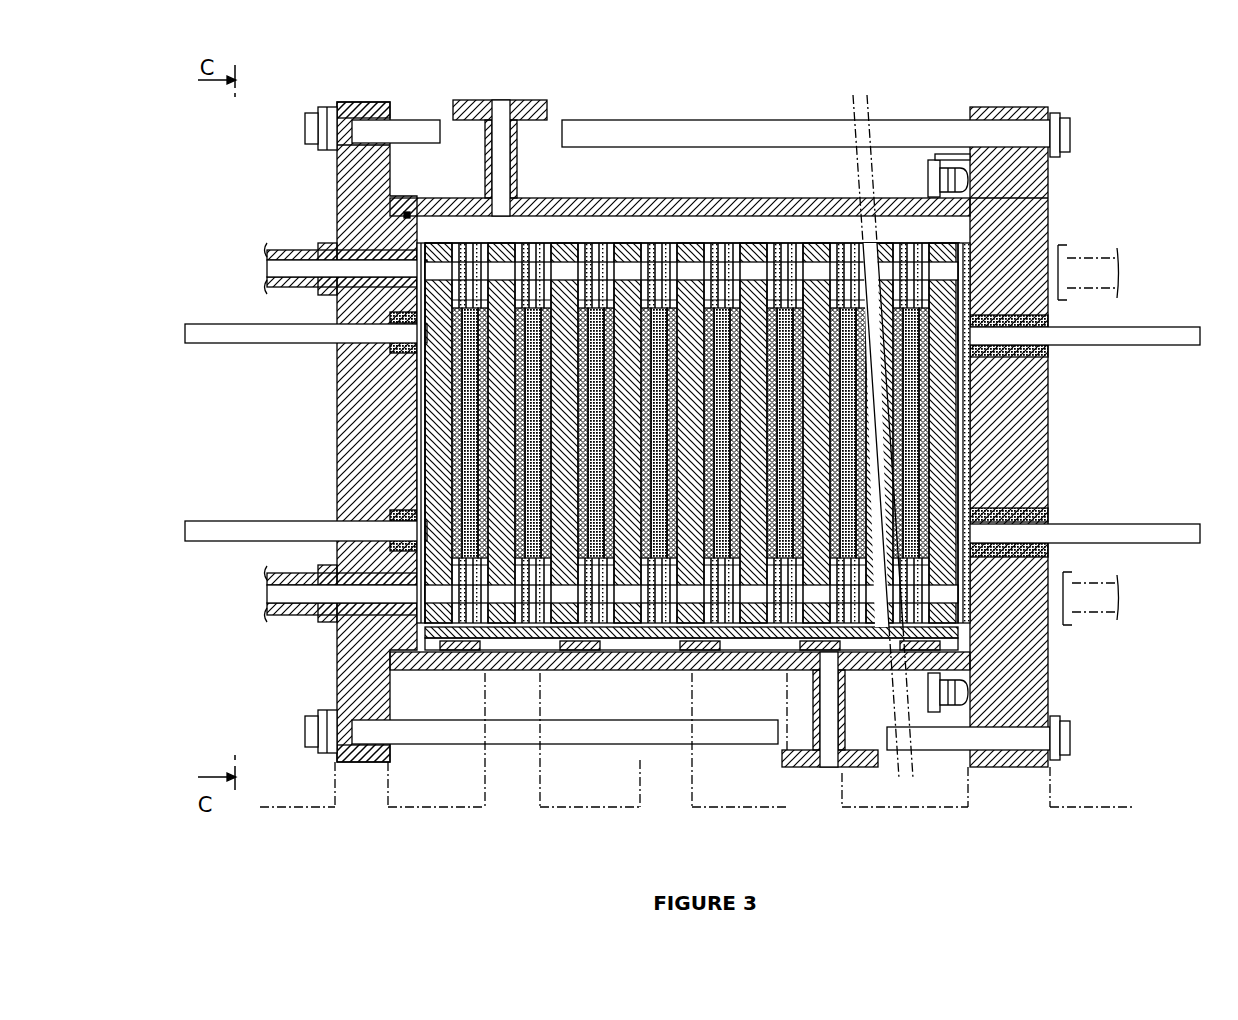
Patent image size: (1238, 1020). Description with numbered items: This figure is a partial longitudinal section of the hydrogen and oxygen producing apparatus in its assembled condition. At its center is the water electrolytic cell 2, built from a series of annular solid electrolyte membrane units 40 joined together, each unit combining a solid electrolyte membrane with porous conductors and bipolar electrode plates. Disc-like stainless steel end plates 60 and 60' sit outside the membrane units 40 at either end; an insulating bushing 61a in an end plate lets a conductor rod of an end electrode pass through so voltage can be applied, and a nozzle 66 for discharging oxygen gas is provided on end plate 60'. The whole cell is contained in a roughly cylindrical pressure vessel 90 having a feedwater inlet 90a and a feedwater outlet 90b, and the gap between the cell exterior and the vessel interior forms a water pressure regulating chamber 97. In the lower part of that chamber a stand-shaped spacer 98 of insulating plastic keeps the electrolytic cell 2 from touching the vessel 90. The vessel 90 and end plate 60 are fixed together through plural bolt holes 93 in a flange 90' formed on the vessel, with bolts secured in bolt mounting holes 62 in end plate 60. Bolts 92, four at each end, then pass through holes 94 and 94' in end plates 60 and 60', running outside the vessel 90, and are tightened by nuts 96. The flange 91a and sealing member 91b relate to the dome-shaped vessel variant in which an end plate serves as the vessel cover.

The water electrolytic cell 2 is at (693, 351).
The annular solid electrolyte membrane unit 40 is at (625, 243).
The end plate 60 is at (1062, 437).
The end plate 60' is at (319, 432).
The insulating bushing 61a is at (365, 102).
The bolt mounting hole 62 is at (985, 198).
The nozzle for discharging oxygen gas 66 is at (290, 250).
The pressure vessel 90 is at (680, 138).
The flange 90' is at (929, 390).
The feedwater inlet 90a is at (782, 757).
The feedwater outlet 90b is at (522, 100).
The flange 91a is at (337, 167).
The sealing member 91b is at (407, 215).
The bolt 92 is at (1063, 130).
The bolt hole 93 is at (955, 162).
The hole 94 is at (745, 423).
The hole 94' is at (396, 90).
The nut 96 is at (323, 112).
The water pressure regulating chamber 97 is at (765, 230).
The stand-shaped spacer 98 is at (467, 652).